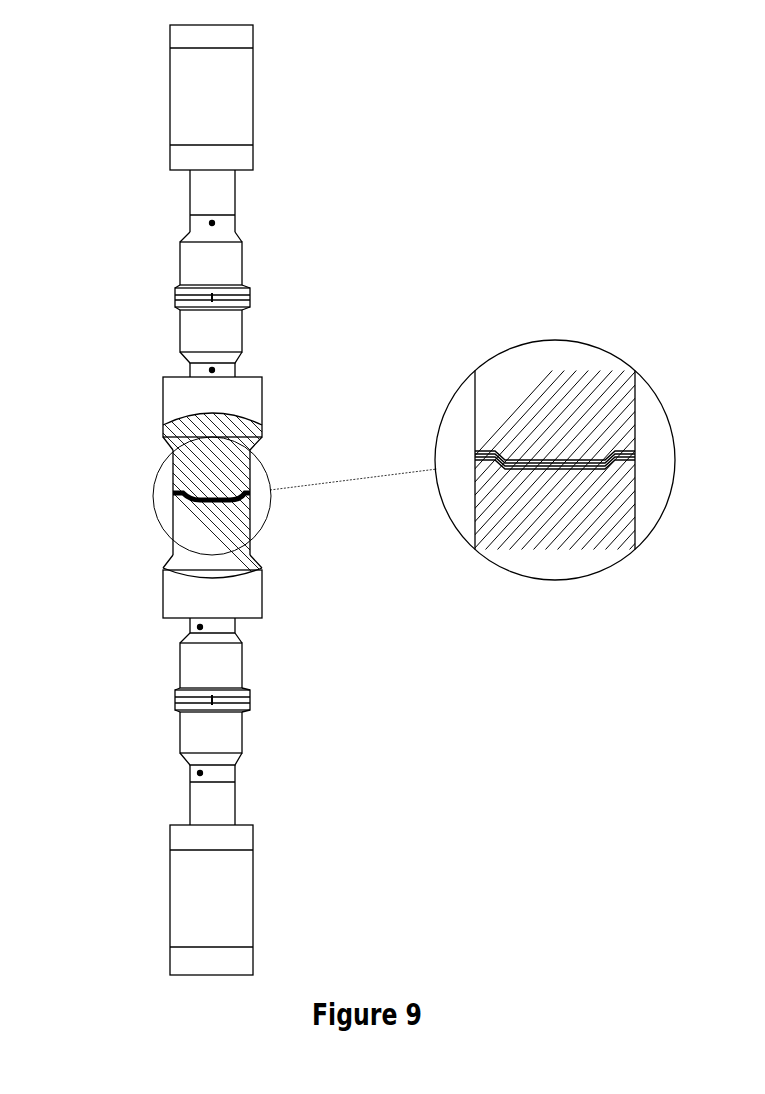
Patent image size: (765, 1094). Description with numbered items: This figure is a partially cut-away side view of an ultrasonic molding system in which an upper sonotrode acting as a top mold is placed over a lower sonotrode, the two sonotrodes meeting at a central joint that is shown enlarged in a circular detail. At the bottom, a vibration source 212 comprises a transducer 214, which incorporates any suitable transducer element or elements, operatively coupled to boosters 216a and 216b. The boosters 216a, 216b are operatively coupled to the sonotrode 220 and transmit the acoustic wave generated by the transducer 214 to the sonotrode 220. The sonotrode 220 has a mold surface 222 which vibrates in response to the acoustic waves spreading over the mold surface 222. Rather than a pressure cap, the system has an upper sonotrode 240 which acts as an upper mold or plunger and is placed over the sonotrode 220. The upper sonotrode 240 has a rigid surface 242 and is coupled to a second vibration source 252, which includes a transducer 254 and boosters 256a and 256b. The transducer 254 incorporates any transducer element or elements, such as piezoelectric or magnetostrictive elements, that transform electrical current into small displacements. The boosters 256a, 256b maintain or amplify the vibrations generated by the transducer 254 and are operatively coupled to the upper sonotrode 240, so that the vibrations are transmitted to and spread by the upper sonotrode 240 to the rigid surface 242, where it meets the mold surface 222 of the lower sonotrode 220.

The vibration source 252 is at (250, 201).
The transducer 254 is at (238, 95).
The booster 256a is at (190, 262).
The booster 256b is at (190, 330).
The upper sonotrode 240 is at (230, 395).
The mold surface 222 is at (252, 495).
The rigid surface 242 is at (173, 493).
The sonotrode 220 is at (230, 602).
The vibration source 212 is at (314, 796).
The booster 216a is at (230, 740).
The booster 216b is at (230, 665).
The transducer 214 is at (230, 902).